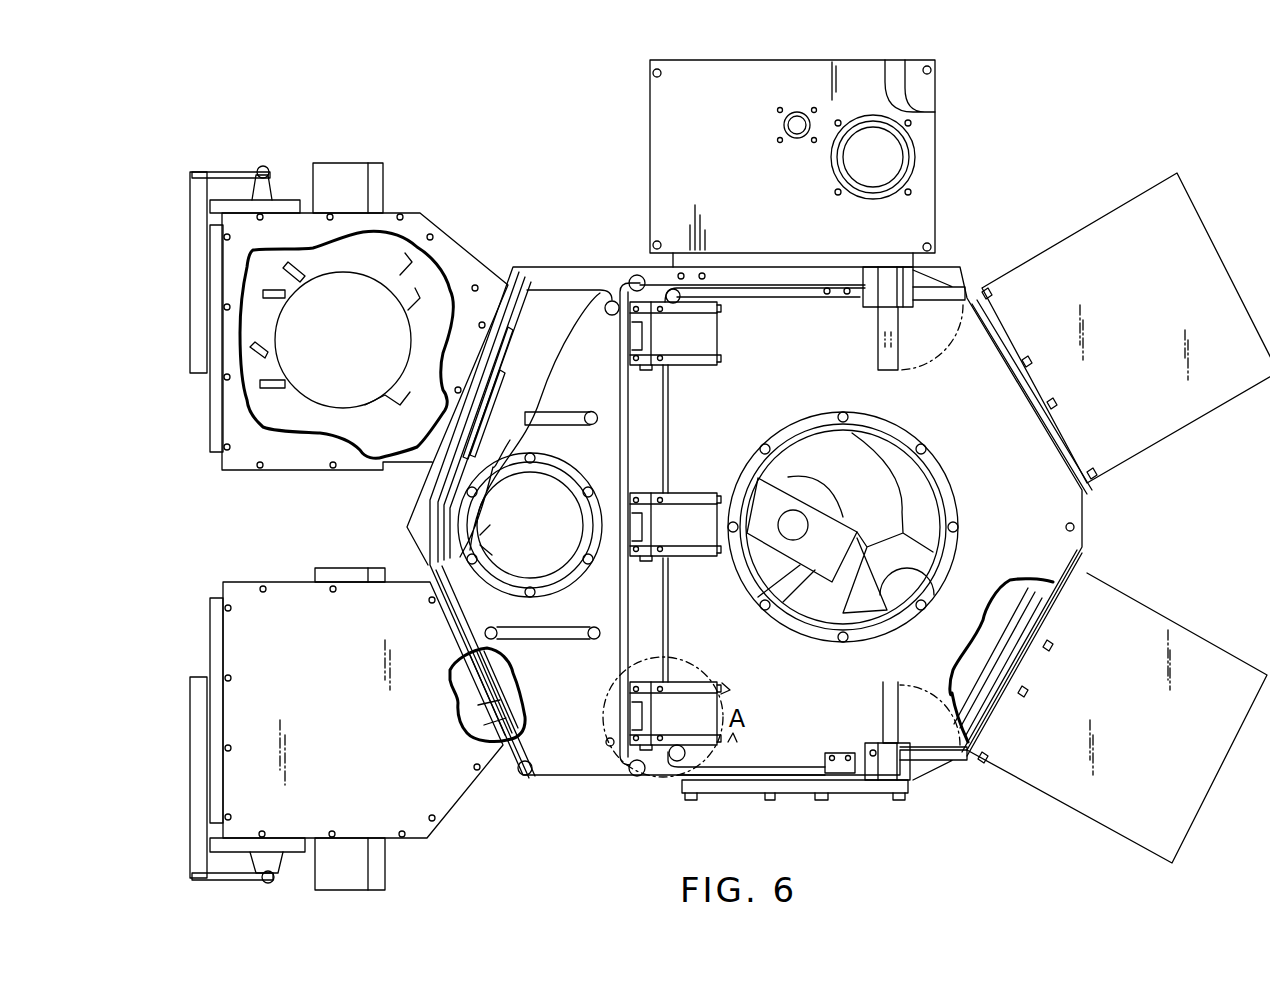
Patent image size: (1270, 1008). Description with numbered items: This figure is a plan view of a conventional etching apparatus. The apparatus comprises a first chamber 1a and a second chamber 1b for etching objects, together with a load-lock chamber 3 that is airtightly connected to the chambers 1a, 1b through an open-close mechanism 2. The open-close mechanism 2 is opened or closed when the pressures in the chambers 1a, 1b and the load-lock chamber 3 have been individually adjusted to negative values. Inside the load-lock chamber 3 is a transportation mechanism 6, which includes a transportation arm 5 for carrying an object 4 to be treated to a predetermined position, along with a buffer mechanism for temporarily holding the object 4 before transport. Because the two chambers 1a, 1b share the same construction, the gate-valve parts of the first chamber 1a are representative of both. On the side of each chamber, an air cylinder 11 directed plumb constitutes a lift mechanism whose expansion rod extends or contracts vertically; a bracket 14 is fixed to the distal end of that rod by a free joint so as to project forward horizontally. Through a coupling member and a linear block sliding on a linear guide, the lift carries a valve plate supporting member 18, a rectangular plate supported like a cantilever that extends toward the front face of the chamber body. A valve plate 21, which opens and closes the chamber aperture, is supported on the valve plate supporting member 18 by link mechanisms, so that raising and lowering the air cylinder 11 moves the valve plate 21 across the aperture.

The first chamber 1a is at (420, 208).
The second chamber 1b is at (420, 777).
The open-close mechanism 2 is at (532, 337).
The load-lock chamber 3 is at (767, 687).
The object to be treated 4 is at (360, 300).
The transportation arm 5 is at (850, 533).
The transportation mechanism 6 is at (822, 595).
The air cylinder 11 is at (273, 172).
The bracket 14 is at (220, 170).
The valve plate supporting member 18 is at (193, 293).
The valve plate 21 is at (197, 410).